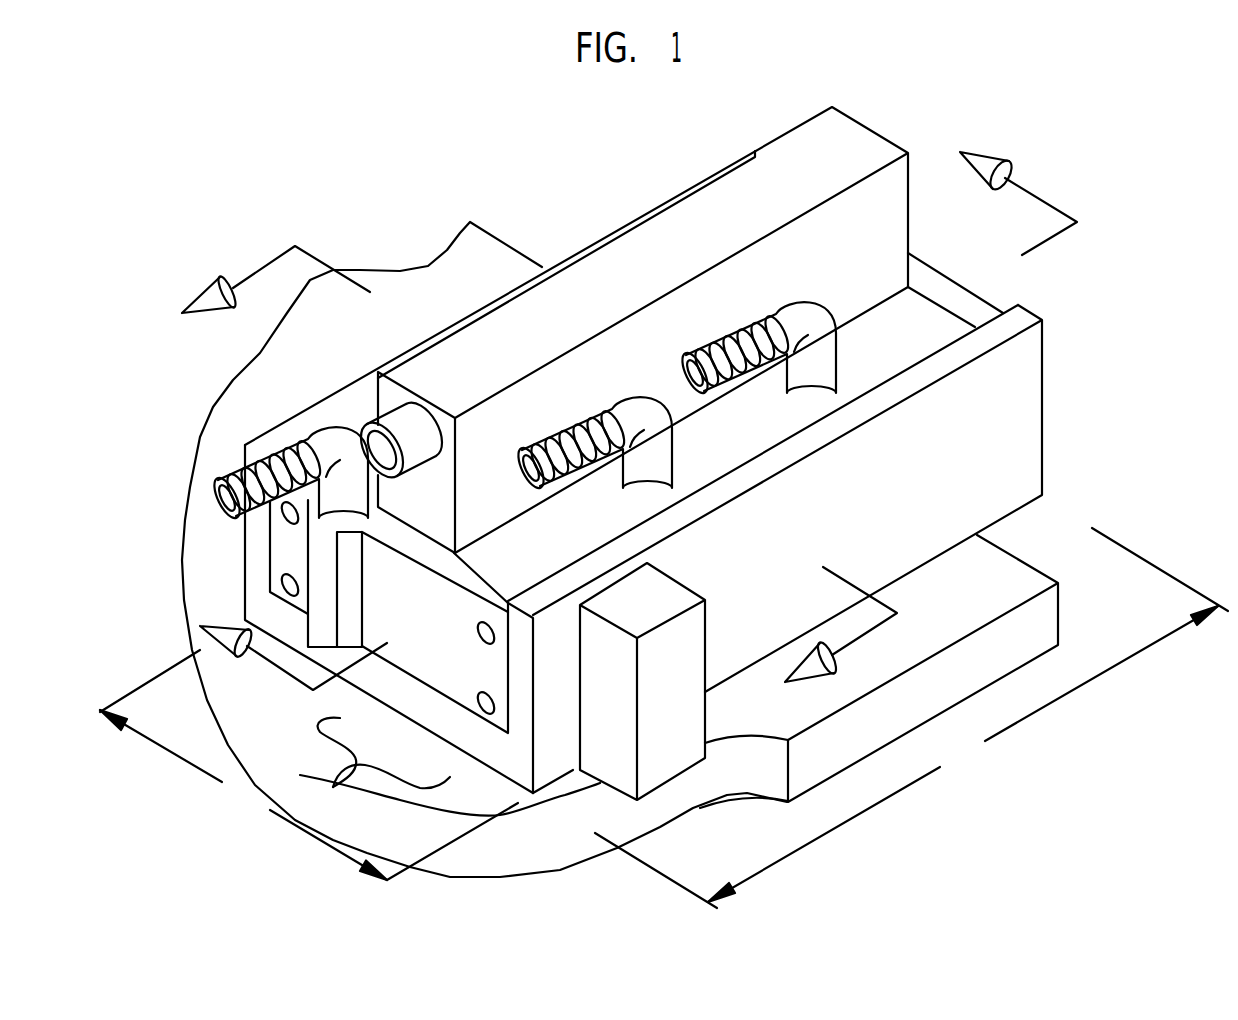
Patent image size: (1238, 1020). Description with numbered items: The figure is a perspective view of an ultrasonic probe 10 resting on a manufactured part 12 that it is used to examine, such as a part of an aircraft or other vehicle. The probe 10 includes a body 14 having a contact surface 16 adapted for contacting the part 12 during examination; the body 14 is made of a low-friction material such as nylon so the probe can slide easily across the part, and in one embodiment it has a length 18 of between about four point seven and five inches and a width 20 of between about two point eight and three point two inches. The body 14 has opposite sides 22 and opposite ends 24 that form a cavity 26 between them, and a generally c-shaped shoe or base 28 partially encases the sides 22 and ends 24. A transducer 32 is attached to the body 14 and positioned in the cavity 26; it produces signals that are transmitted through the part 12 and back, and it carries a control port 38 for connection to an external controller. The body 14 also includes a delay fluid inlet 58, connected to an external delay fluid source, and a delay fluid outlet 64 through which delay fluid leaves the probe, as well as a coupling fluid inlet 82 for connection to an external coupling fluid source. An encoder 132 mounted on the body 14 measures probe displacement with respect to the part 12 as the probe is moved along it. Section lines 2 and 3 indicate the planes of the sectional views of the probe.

The section line 2- 2 is at (524, 477).
The section line 3- 3 is at (638, 404).
The probe 10 is at (878, 98).
The part 12 is at (1022, 660).
The body 14 is at (333, 787).
The contact surface 16 is at (1004, 522).
The length 18 is at (911, 718).
The width 20 is at (309, 765).
The sides 22 is at (410, 567).
The ends 24 is at (430, 645).
The cavity 26 is at (857, 306).
The base 28 is at (507, 658).
The transducer 32 is at (908, 227).
The control port 38 is at (368, 408).
The delay fluid inlet 58 is at (300, 430).
The delay fluid outlet 64 is at (838, 370).
The coupling fluid inlet 82 is at (673, 467).
The encoder 132 is at (640, 705).